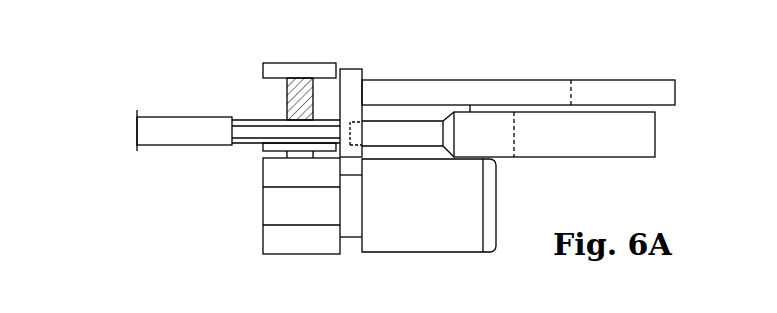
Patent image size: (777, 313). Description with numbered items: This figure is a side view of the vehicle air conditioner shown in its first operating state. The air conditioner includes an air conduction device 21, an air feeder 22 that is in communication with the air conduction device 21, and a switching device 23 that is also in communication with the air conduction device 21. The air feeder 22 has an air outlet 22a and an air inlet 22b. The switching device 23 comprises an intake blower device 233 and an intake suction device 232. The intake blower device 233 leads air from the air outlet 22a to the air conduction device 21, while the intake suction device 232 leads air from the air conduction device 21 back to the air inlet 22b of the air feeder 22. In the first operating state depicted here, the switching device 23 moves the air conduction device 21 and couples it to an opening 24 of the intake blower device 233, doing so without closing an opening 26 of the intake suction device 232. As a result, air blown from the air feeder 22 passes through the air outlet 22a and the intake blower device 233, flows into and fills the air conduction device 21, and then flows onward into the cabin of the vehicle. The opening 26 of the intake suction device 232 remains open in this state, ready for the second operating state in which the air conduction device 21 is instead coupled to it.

The air conduction device 21 is at (170, 158).
The air feeder 22 is at (534, 121).
The air outlet 22a is at (537, 172).
The air inlet 22b is at (625, 62).
The switching device 23 is at (247, 211).
The opening of the intake blower device 24 is at (333, 135).
The opening of the intake suction device 26 is at (333, 90).
The intake suction device 232 is at (410, 66).
The intake blower device 233 is at (403, 148).